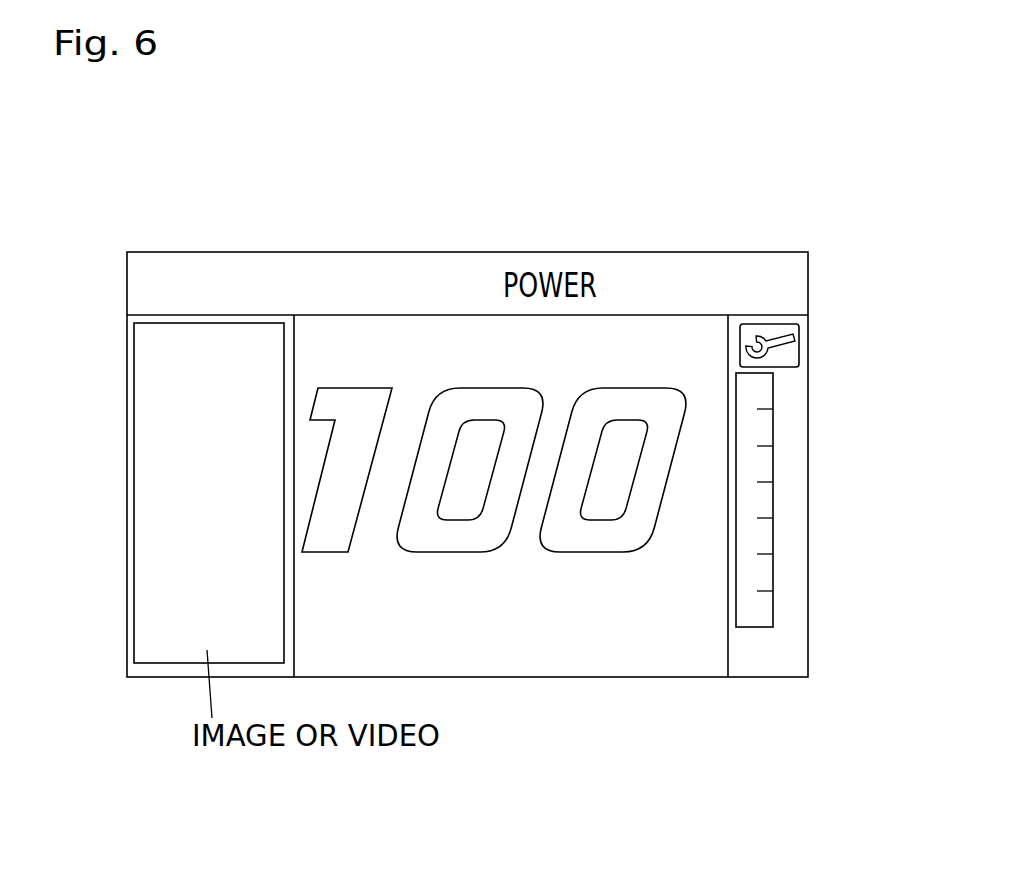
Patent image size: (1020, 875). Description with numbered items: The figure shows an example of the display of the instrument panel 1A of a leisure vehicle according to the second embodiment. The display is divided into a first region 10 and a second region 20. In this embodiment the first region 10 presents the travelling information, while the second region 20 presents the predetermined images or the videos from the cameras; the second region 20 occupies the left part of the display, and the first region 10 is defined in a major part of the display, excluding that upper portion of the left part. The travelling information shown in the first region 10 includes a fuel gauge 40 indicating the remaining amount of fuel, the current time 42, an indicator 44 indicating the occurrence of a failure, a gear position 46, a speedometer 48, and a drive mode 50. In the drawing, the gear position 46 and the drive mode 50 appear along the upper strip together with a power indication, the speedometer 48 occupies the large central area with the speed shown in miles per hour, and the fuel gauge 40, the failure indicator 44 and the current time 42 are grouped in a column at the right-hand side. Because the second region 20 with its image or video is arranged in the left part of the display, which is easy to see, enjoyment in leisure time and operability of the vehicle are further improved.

The instrument panel 1A is at (738, 243).
The first region 10 is at (548, 650).
The second region 20 is at (127, 668).
The fuel gauge 40 is at (773, 502).
The current time 42 is at (770, 678).
The indicator 44 is at (798, 359).
The gear position 46 is at (245, 253).
The speedometer 48 is at (618, 395).
The drive mode 50 is at (443, 253).